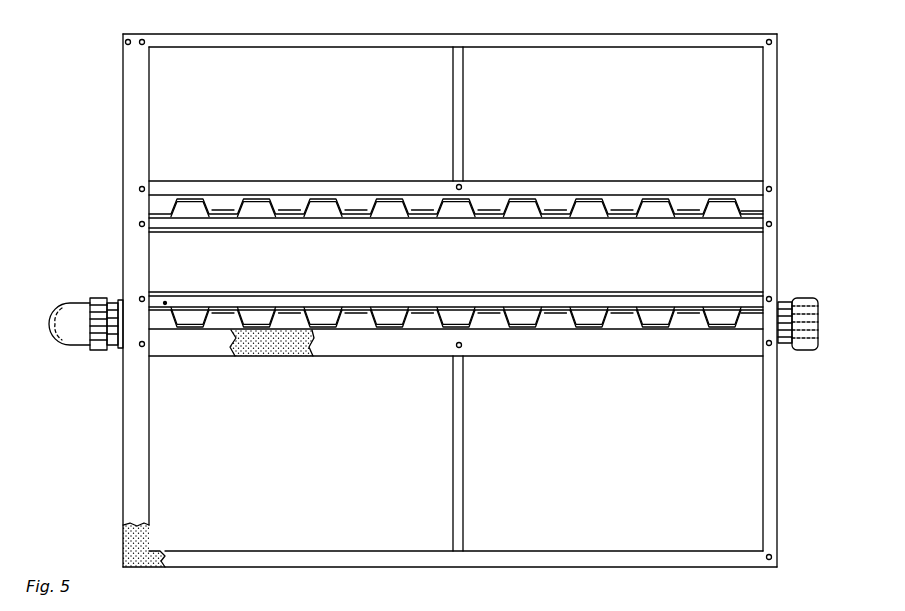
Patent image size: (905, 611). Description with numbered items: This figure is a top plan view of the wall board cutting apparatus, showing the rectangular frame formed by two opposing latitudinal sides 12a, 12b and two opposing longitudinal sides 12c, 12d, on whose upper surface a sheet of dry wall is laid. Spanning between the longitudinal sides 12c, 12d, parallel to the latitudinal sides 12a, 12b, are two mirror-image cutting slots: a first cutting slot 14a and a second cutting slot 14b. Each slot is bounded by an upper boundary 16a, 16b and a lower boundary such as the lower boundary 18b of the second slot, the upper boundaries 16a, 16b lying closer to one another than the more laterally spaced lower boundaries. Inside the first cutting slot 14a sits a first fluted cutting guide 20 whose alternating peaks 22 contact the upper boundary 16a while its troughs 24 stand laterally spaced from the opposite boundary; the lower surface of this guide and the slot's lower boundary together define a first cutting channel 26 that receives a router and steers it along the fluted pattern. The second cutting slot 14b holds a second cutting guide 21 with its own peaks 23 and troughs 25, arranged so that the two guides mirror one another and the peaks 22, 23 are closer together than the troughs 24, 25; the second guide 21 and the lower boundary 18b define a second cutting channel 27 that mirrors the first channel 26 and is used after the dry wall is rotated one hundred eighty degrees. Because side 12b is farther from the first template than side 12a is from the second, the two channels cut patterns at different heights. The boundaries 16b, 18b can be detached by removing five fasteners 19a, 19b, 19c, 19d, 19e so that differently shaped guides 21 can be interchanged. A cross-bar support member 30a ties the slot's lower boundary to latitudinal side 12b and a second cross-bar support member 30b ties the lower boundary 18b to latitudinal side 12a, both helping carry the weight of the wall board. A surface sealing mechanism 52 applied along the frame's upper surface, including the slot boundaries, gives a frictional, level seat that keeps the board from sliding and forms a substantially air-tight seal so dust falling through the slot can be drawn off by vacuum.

The latitudinal side 12a is at (340, 34).
The latitudinal side 12b is at (310, 567).
The longitudinal side 12c is at (130, 436).
The longitudinal side 12d is at (778, 93).
The first cutting slot 14a is at (748, 324).
The second cutting slot 14b is at (748, 201).
The upper boundary 16a is at (583, 291).
The upper boundary 16b is at (597, 227).
The lower boundary 18b is at (615, 190).
The fastener 19a is at (139, 189).
The fastener 19b is at (139, 224).
The fastener 19c is at (461, 185).
The fastener 19d is at (772, 189).
The fastener 19e is at (772, 224).
The first cutting guide 20 is at (165, 302).
The second cutting guide 21 is at (136, 212).
The peak 22 is at (222, 308).
The peak 23 is at (222, 210).
The trough 24 is at (258, 326).
The trough 25 is at (260, 200).
The first cutting channel 26 is at (357, 318).
The second cutting channel 27 is at (417, 207).
The cross-bar support member 30a is at (458, 456).
The second cross-bar support member 30b is at (462, 97).
The surface sealing mechanism 52 is at (255, 357).